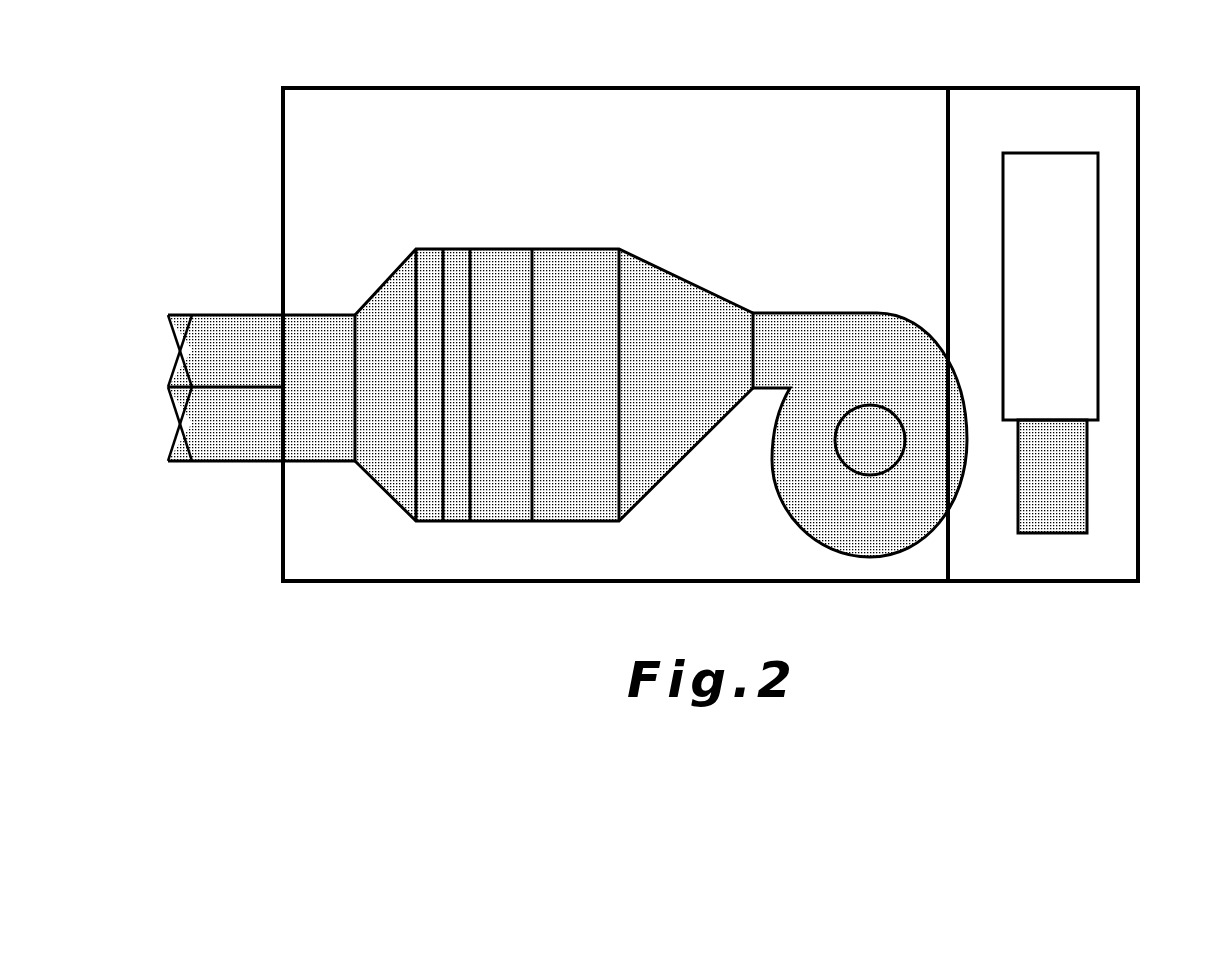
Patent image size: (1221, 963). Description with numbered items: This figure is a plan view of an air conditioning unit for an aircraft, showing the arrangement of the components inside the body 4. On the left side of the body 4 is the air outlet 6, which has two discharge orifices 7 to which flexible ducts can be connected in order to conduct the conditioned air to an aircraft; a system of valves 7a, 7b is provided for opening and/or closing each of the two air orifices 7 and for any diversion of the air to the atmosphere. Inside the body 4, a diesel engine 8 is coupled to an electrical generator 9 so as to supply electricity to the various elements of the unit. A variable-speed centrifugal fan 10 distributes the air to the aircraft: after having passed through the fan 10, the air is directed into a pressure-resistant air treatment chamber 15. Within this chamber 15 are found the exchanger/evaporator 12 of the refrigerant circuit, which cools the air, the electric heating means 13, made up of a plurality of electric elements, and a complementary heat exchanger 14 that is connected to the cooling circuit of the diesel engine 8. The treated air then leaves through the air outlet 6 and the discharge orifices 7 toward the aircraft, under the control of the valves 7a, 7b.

The body 4 is at (1018, 85).
The air outlet 6 is at (306, 503).
The discharge orifices 7 is at (216, 315).
The valve 7a is at (180, 445).
The valve 7b is at (180, 370).
The diesel engine 8 is at (1100, 260).
The electrical generator 9 is at (1087, 490).
The variable-speed centrifugal fan 10 is at (877, 313).
The exchanger/evaporator 12 is at (577, 522).
The electric heating means 13 is at (453, 522).
The complementary heat exchanger 14 is at (420, 522).
The pressure-resistant air treatment chamber 15 is at (645, 531).